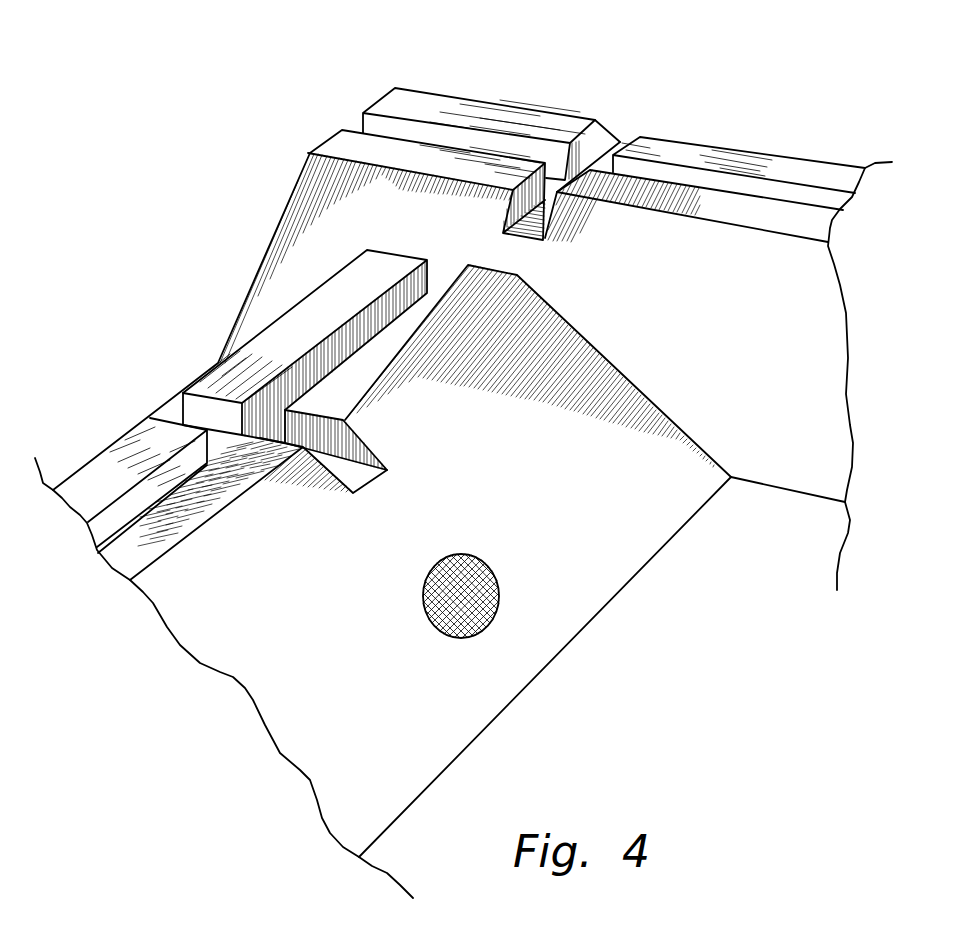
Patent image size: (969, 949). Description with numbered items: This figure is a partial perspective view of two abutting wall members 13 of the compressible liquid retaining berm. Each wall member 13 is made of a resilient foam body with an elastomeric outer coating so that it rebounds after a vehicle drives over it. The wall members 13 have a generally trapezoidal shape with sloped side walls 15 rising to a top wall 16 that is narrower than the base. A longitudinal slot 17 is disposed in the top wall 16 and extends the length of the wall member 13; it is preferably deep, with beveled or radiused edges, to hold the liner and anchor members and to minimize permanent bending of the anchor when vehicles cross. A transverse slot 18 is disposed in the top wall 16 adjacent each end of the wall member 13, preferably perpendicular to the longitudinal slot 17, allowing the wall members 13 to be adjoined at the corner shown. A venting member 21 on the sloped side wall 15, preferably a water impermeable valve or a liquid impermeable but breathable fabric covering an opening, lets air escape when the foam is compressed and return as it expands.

The wall member 13 is at (607, 607).
The sloped side wall 15 is at (408, 702).
The top wall 16 is at (548, 128).
The longitudinal slot 17 is at (788, 192).
The transverse slot 18 is at (200, 405).
The venting member 21 is at (480, 552).